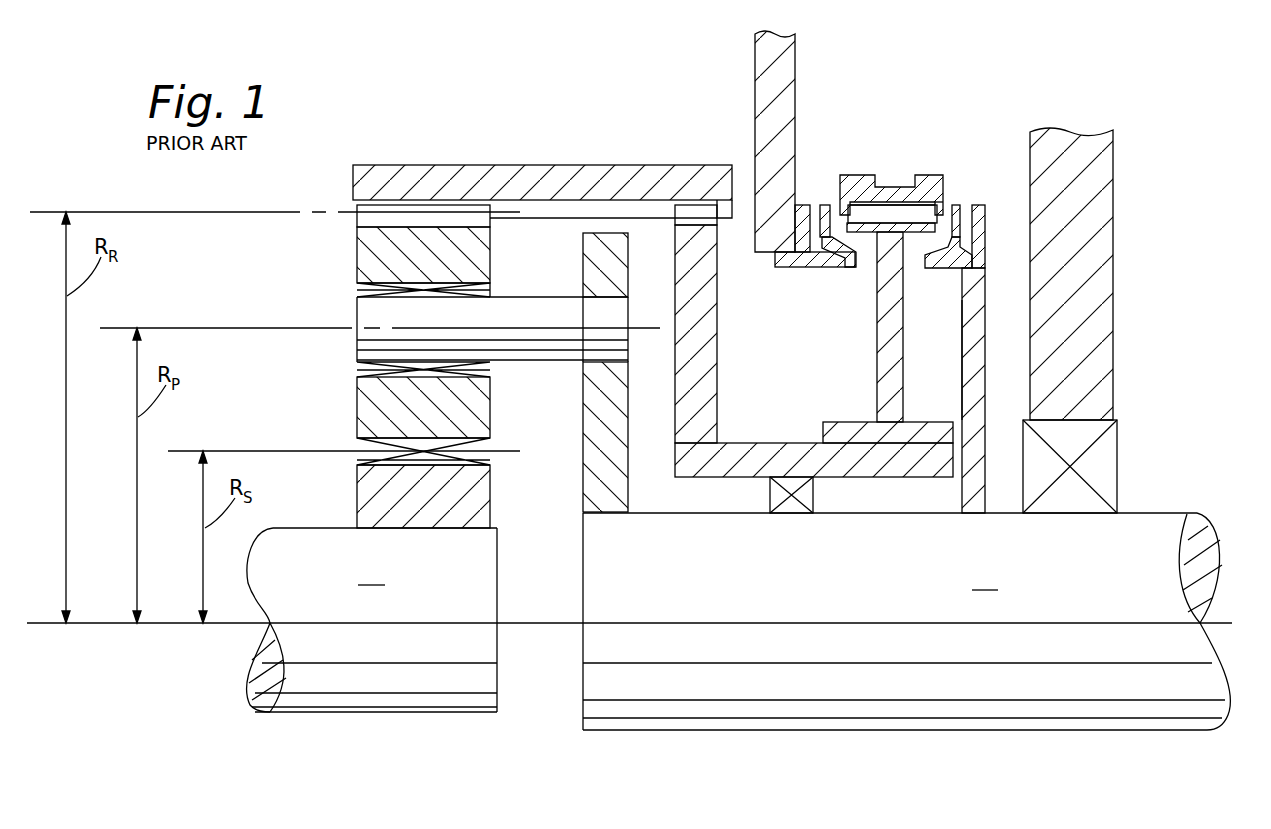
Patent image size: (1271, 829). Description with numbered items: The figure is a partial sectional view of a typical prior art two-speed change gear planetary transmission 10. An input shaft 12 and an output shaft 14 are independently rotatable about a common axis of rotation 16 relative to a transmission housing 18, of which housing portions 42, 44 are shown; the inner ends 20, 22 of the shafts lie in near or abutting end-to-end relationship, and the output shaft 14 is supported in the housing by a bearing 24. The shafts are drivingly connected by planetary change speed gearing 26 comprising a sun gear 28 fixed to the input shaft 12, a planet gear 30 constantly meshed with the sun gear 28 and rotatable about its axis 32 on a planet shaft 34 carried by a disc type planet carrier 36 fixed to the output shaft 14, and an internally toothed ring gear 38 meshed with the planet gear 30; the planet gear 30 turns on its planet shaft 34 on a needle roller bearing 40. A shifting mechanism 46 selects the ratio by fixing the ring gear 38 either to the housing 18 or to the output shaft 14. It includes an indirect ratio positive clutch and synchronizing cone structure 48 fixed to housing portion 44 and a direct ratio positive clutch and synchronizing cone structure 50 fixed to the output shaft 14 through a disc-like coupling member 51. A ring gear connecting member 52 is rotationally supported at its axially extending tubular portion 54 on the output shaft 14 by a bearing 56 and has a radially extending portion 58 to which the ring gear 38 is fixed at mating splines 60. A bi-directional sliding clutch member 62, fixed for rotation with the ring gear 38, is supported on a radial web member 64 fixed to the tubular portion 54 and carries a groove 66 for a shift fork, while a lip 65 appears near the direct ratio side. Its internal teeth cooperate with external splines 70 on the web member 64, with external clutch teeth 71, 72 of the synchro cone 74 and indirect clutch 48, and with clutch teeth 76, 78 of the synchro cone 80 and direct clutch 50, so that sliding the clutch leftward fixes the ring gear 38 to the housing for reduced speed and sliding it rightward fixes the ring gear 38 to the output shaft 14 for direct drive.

The two-speed change gear planetary transmission 10 is at (484, 284).
The input shaft 12 is at (372, 620).
The output shaft 14 is at (906, 621).
The axis of rotation 16 is at (1222, 626).
The transmission housing 18 is at (1106, 278).
The inner end of input shaft 20 is at (498, 566).
The inner end of output shaft 22 is at (581, 592).
The bearing 24 is at (1108, 486).
The planetary change speed gearing 26 is at (586, 162).
The sun gear 28 is at (468, 510).
The planet gear 30 is at (470, 262).
The planet gear axis 32 is at (238, 330).
The planet shaft 34 is at (557, 348).
The planet carrier 36 is at (603, 468).
The ring gear 38 is at (400, 175).
The needle roller bearing 40 is at (383, 268).
The housing portion 42 is at (1055, 152).
The housing portion 44 is at (778, 80).
The shifting mechanism 46 is at (909, 132).
The indirect ratio positive clutch and synchronizing cone structure 48 is at (797, 257).
The direct ratio positive clutch and synchronizing cone structure 50 is at (986, 245).
The coupling member 51 is at (977, 320).
The ring gear connecting member 52 is at (717, 402).
The tubular portion 54 is at (775, 457).
The bearing 56 is at (807, 493).
The radially extending portion 58 is at (705, 343).
The mating splines 60 is at (697, 215).
The sliding clutch member 62 is at (853, 182).
The radial web member 64 is at (898, 310).
The race lip 65 is at (943, 202).
The groove 66 is at (880, 205).
The external splines 70 is at (890, 213).
The external clutch teeth 71 is at (826, 213).
The external clutch teeth 72 is at (802, 213).
The synchro cone 74 is at (856, 256).
The clutch teeth 76 is at (955, 205).
The clutch teeth 78 is at (980, 207).
The synchro cone 80 is at (928, 262).